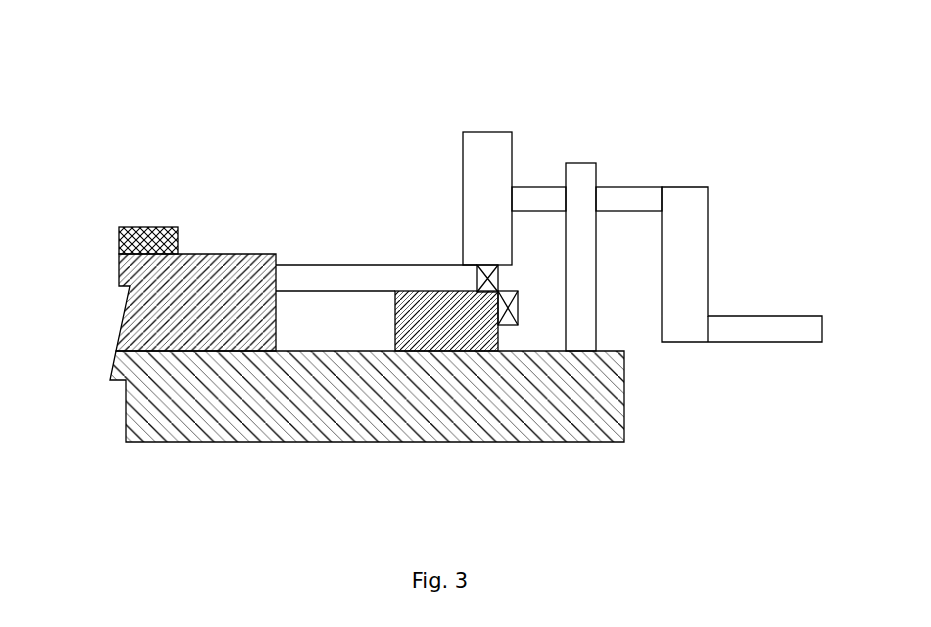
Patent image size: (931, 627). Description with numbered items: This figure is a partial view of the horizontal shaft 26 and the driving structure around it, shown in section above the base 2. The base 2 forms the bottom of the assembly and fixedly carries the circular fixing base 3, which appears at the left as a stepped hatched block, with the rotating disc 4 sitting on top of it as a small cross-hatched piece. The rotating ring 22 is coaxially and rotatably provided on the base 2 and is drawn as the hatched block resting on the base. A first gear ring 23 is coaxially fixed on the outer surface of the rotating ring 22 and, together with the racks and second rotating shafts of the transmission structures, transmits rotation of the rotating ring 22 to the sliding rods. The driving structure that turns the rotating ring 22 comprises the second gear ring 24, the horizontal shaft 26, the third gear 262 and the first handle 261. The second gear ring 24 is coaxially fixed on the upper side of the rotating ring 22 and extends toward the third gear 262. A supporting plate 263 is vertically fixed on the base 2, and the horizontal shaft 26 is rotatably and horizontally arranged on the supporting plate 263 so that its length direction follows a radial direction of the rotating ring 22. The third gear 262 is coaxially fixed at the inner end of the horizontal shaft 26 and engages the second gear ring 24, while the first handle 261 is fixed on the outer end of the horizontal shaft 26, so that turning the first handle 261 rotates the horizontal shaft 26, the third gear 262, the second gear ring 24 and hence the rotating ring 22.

The base 2 is at (413, 418).
The fixing base 3 is at (150, 318).
The rotating disc 4 is at (118, 232).
The rotating ring 22 is at (462, 351).
The first gear ring 23 is at (518, 308).
The second gear ring 24 is at (426, 277).
The horizontal shaft 26 is at (620, 187).
The first handle 261 is at (693, 273).
The third gear 262 is at (485, 155).
The supporting plate 263 is at (584, 172).